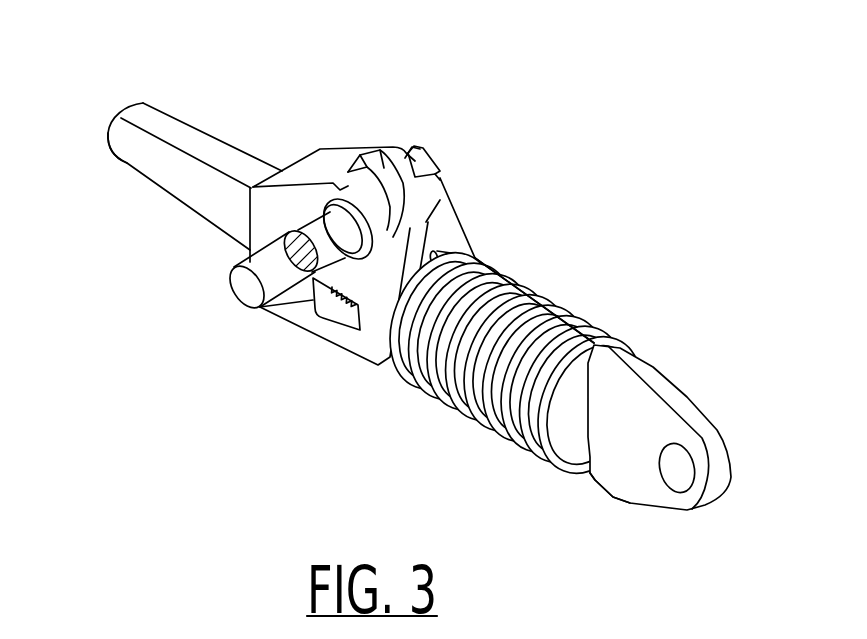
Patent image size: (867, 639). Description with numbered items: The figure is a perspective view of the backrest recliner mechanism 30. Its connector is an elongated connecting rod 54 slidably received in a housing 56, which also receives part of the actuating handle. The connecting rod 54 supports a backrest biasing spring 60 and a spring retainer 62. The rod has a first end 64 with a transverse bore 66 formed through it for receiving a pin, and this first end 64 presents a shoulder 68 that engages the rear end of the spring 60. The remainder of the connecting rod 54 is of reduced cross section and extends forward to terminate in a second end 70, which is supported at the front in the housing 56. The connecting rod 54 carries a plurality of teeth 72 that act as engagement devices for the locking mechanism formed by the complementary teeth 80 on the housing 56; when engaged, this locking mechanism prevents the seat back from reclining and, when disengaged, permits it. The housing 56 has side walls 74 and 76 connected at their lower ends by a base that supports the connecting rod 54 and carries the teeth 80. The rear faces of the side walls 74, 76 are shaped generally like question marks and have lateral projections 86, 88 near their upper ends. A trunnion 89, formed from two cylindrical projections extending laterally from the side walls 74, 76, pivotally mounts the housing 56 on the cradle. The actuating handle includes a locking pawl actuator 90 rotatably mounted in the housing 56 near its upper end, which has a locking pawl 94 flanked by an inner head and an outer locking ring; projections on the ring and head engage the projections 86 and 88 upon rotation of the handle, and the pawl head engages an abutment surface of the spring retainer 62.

The backrest recliner mechanism 30 is at (612, 283).
The connecting rod 54 is at (210, 137).
The housing 56 is at (337, 147).
The backrest biasing spring 60 is at (532, 295).
The spring retainer 62 is at (463, 232).
The first end 64 is at (665, 374).
The transverse bore 66 is at (688, 457).
The shoulder 68 is at (592, 472).
The second end 70 is at (155, 195).
The teeth 72 is at (343, 307).
The side wall 74 is at (298, 300).
The side wall 76 is at (365, 145).
The teeth 80 is at (344, 297).
The lateral projection 86 is at (336, 185).
The lateral projection 88 is at (437, 163).
The trunnion 89 is at (229, 285).
The locking pawl actuator 90 is at (265, 283).
The locking pawl 94 is at (412, 145).